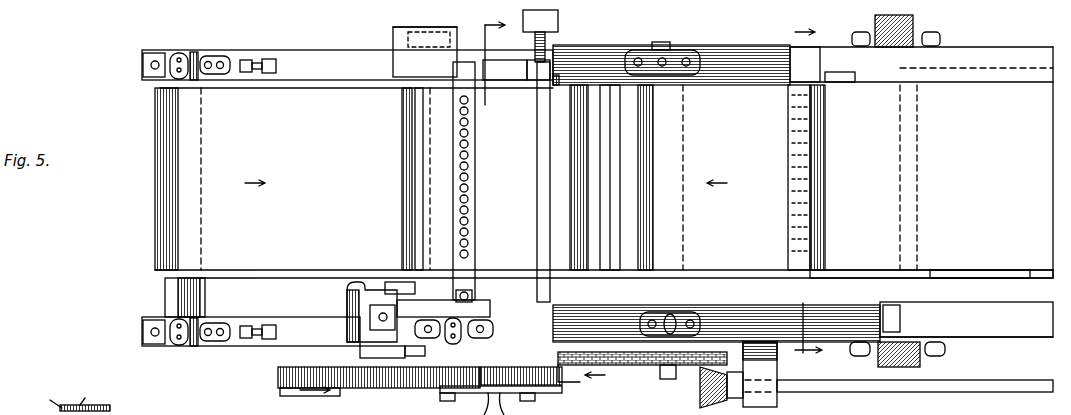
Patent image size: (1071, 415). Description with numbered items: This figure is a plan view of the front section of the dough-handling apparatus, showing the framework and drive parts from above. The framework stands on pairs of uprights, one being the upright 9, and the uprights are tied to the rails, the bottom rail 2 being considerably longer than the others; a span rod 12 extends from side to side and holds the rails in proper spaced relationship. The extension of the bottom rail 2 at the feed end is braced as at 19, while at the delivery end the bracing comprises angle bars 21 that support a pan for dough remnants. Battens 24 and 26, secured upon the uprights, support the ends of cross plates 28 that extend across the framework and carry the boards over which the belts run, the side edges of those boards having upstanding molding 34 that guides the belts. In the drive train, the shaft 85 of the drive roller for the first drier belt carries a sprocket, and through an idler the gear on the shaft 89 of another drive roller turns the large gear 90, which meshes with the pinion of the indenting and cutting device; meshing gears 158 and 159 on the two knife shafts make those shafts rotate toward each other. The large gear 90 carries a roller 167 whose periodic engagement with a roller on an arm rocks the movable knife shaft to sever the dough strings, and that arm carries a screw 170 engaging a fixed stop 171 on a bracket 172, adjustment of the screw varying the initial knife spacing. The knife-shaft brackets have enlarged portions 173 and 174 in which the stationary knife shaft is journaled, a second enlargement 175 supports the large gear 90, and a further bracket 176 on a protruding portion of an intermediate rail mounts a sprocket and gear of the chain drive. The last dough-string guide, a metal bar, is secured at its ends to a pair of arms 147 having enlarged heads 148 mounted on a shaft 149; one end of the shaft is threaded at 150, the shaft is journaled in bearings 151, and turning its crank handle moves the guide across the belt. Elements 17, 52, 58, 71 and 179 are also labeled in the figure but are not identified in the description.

The bottom rail 2 is at (300, 62).
The upright 9 is at (51, 398).
The span rod 12 is at (576, 203).
The bracket 17 is at (866, 350).
The bracing 19 is at (483, 58).
The angle bars 21 is at (808, 192).
The batten 24 is at (895, 380).
The batten 26 is at (85, 392).
The cross plates 28 is at (920, 355).
The upstanding molding 34 is at (950, 275).
The post 52 is at (170, 296).
The clamp 58 is at (745, 270).
The beam 71 is at (709, 270).
The shaft of the drive roller 85 is at (662, 380).
The shaft of the drive roller 89 is at (425, 388).
The large gear 90 is at (278, 378).
The arms 147 is at (485, 105).
The enlarged heads 148 is at (560, 68).
The shaft 149 is at (828, 83).
The threaded end 150 is at (546, 40).
The bearings 151 is at (530, 12).
The gear 158 is at (440, 27).
The gear 159 is at (400, 45).
The roller 167 is at (385, 283).
The screw 170 is at (810, 206).
The fixed stop 171 is at (475, 205).
The bracket 172 is at (347, 332).
The enlarged portion 173 is at (347, 306).
The enlarged portion 174 is at (832, 258).
The second enlargement 175 is at (405, 274).
The bracket 176 is at (572, 372).
The block 179 is at (540, 128).